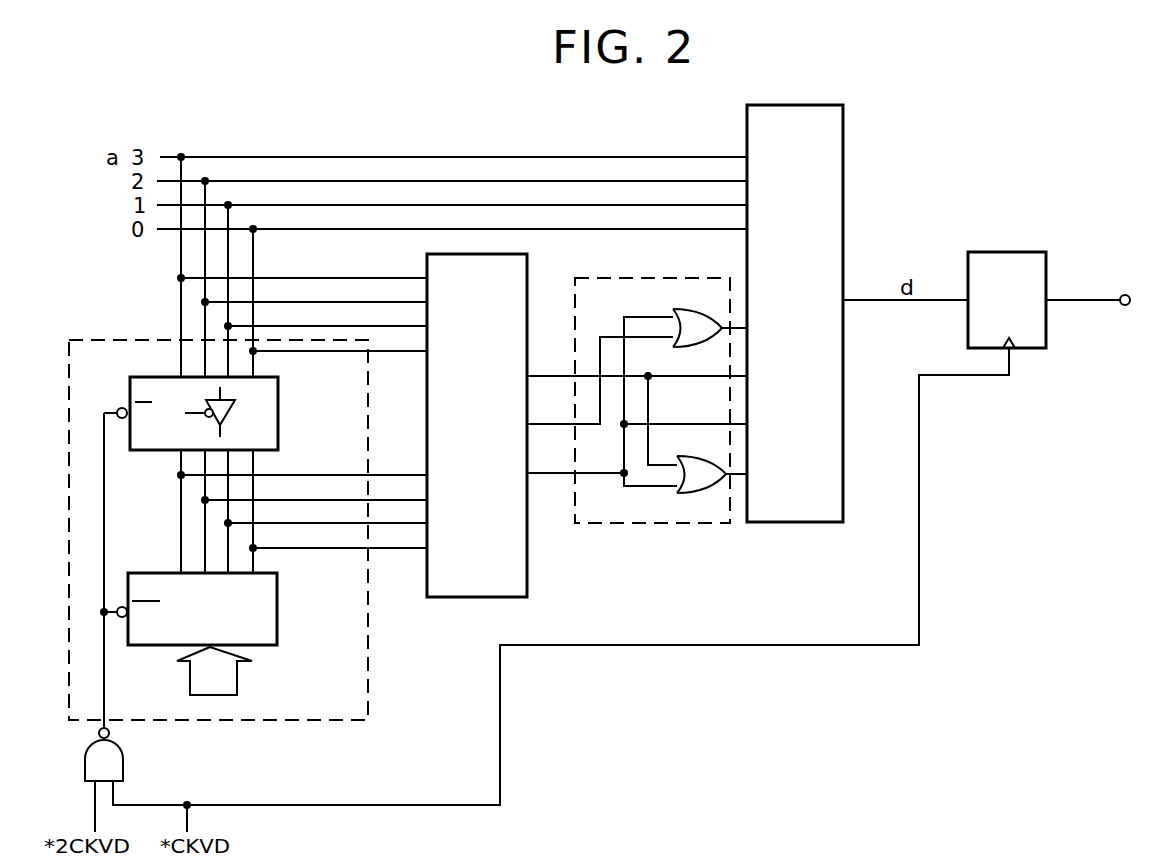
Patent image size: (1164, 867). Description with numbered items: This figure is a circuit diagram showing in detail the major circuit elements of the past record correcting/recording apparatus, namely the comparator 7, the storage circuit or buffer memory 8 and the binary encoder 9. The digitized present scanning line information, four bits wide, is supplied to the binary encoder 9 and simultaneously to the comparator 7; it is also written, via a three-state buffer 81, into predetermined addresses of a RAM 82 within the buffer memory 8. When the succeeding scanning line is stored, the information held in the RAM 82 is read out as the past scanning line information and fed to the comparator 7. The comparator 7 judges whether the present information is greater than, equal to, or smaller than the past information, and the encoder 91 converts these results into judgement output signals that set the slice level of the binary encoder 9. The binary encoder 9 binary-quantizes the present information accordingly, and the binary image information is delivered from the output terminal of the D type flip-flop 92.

The comparator 7 is at (527, 585).
The buffer memory circuit 8 is at (173, 716).
The three-state buffer 81 is at (160, 386).
The RAM 82 is at (270, 645).
The binary encoder 9 is at (843, 140).
The encoder 91 is at (690, 523).
The D type flip-flop 92 is at (1040, 253).